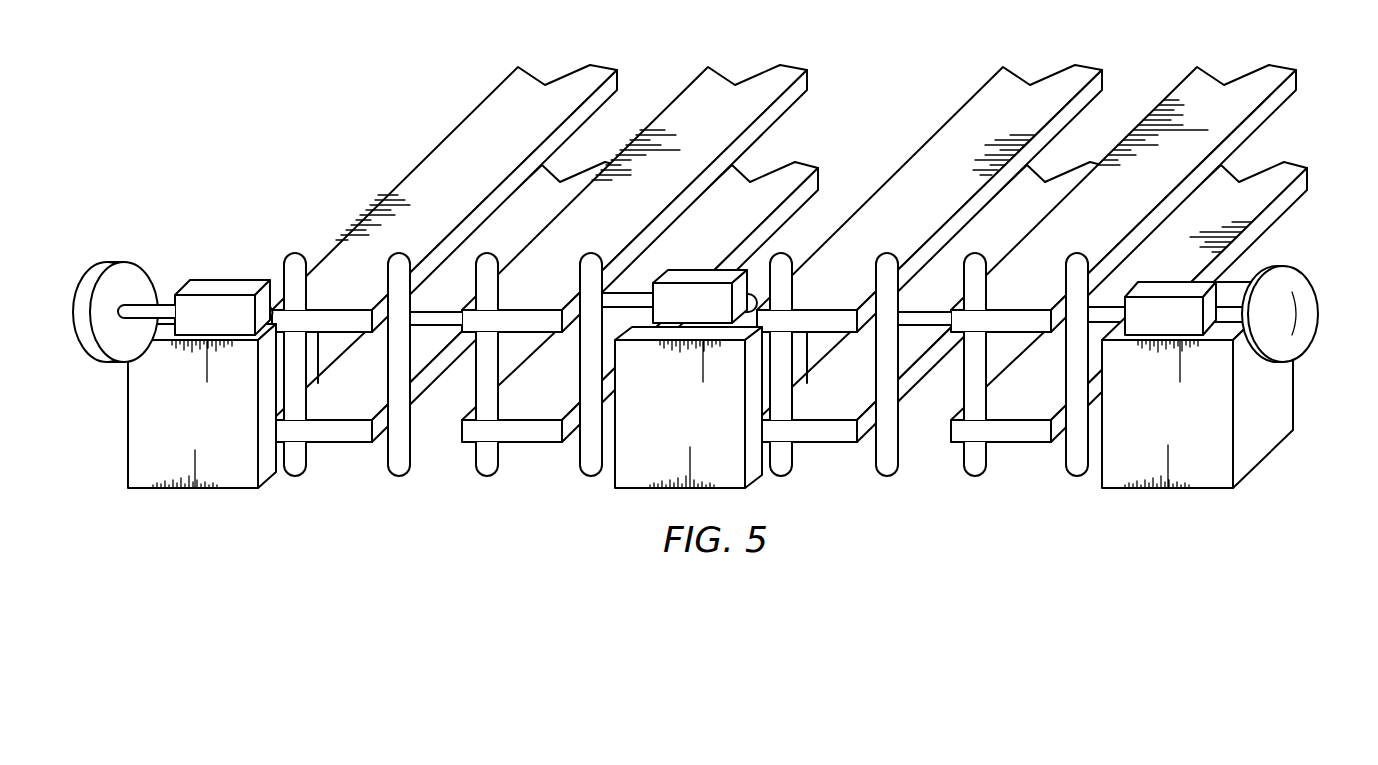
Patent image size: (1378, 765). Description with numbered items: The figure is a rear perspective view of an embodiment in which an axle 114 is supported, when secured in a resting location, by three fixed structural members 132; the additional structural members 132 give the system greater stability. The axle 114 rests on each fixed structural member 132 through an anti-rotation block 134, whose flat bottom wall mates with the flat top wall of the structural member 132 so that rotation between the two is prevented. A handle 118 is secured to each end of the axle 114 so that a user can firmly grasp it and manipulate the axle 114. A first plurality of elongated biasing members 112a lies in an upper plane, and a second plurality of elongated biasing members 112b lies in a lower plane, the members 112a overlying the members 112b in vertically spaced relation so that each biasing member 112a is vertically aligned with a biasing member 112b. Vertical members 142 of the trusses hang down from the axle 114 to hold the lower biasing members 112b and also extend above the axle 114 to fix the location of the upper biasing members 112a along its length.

The first plurality of elongated biasing members 112a is at (376, 288).
The second plurality of elongated biasing members 112b is at (372, 399).
The axle 114 is at (918, 322).
The handle 118 is at (125, 263).
The fixed structural member 132 is at (215, 427).
The anti-rotation block 134 is at (232, 328).
The vertical member 142 is at (297, 462).